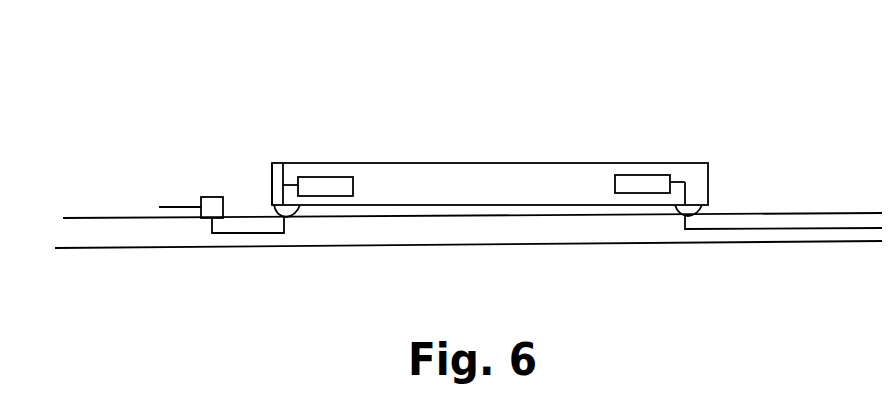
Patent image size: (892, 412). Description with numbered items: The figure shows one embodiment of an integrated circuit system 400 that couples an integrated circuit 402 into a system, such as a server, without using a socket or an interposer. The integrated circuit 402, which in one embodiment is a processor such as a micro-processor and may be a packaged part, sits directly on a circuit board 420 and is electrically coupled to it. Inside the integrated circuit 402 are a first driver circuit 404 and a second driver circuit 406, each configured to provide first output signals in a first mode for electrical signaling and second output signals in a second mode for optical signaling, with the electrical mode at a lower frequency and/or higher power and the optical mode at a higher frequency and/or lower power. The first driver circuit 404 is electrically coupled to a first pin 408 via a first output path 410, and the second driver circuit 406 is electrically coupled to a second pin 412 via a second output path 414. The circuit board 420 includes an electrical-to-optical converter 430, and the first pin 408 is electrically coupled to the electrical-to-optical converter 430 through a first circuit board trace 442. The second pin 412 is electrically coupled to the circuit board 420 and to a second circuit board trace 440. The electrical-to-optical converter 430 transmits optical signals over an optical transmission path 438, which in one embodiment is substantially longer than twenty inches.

The integrated circuit system 400 is at (719, 68).
The integrated circuit 402 is at (478, 172).
The first driver circuit 404 is at (326, 182).
The second driver circuit 406 is at (645, 182).
The first pin 408 is at (275, 185).
The first output path 410 is at (283, 185).
The second pin 412 is at (694, 203).
The second output path 414 is at (678, 182).
The circuit board 420 is at (490, 240).
The electrical-to-optical converter 430 is at (210, 197).
The optical transmission path 438 is at (173, 207).
The second circuit board trace 440 is at (805, 230).
The first circuit board trace 442 is at (243, 233).